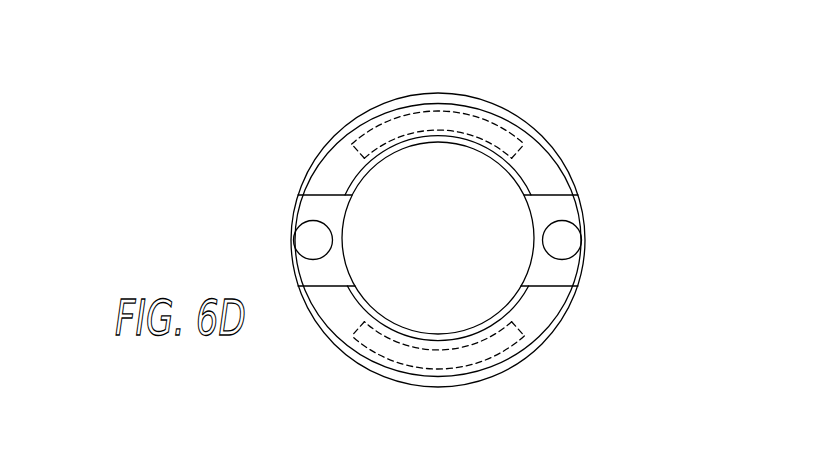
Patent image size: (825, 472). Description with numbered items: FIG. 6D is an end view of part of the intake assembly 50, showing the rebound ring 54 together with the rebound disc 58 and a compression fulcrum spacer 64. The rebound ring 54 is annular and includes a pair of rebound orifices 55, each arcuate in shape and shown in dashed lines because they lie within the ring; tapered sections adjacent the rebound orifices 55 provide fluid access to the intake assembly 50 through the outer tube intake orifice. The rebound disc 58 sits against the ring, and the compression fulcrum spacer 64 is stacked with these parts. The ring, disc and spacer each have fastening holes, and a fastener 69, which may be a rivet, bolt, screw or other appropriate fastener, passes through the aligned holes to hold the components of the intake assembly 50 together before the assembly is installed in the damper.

The intake assembly 50 is at (563, 147).
The rebound ring 54 is at (545, 310).
The rebound orifice 55 is at (380, 114).
The rebound disc 58 is at (488, 100).
The compression fulcrum spacer 64 is at (567, 210).
The fastener 69 is at (562, 238).